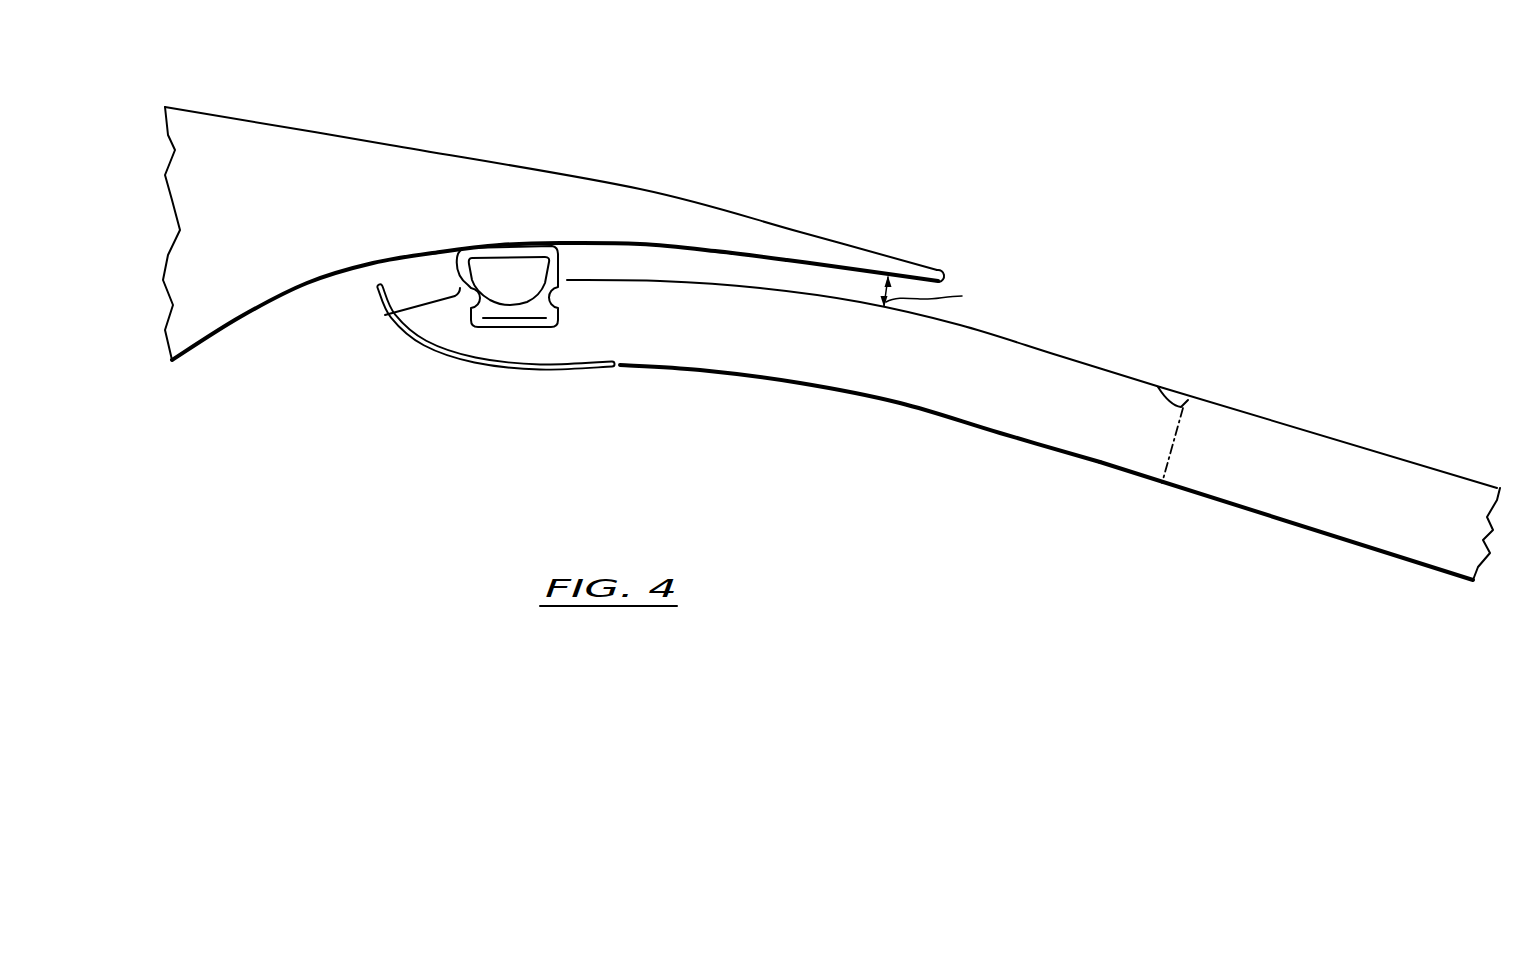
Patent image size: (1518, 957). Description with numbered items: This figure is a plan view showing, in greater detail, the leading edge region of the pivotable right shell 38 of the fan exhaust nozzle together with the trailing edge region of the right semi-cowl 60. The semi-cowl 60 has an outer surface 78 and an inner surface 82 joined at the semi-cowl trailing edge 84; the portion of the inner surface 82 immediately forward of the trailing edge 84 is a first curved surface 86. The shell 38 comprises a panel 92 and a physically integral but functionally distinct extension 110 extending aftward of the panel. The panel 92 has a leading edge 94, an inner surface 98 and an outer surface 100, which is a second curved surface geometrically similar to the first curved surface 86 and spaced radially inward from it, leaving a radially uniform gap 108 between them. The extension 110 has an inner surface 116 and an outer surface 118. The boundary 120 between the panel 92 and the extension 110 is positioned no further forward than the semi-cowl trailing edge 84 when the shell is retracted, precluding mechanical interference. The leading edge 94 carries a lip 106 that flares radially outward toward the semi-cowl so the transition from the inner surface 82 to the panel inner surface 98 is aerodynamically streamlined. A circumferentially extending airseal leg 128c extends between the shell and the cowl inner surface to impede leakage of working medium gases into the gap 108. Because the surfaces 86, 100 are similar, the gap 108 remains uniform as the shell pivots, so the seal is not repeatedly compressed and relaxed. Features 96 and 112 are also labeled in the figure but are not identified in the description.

The right shell 38 is at (1130, 200).
The right semi-cowl 60 is at (550, 219).
The outer surface 78 is at (357, 139).
The inner surface 82 is at (252, 318).
The semi-cowl trailing edge 84 is at (944, 277).
The first curved surface 86 is at (705, 253).
The panel 92 is at (863, 372).
The leading edge 94 is at (385, 318).
The joint 96 is at (1159, 477).
The inner surface 98 is at (957, 420).
The outer surface 100 is at (1075, 359).
The lip 106 is at (375, 288).
The gap 108 is at (761, 226).
The extension 110 is at (1300, 491).
The overlapping lip 112 is at (1157, 386).
The inner surface 116 is at (1359, 548).
The outer surface 118 is at (1310, 432).
The boundary 120 is at (1159, 483).
The circumferentially extending leg 128c is at (538, 308).